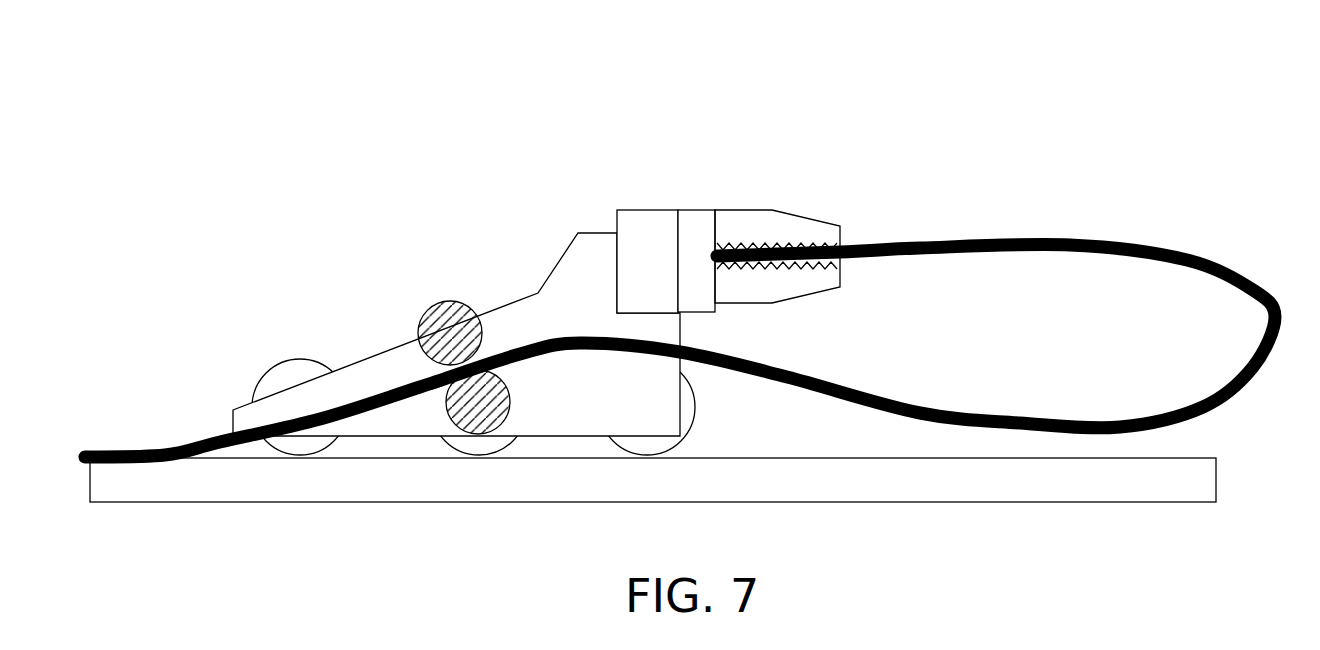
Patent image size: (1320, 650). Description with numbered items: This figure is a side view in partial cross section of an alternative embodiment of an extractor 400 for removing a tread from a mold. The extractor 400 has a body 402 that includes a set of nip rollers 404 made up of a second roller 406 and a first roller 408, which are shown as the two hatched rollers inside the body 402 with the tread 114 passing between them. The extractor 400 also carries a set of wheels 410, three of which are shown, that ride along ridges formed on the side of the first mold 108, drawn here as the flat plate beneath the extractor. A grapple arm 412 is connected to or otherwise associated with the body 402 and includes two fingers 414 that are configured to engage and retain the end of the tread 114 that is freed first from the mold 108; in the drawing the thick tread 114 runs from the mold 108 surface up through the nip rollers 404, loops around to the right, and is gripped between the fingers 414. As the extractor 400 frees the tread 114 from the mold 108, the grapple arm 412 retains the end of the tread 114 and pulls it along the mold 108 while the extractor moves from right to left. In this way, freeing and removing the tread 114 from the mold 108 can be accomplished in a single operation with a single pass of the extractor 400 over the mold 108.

The first mold 108 is at (1212, 470).
The tread 114 is at (1075, 240).
The extractor 400 is at (565, 310).
The body 402 is at (358, 347).
The set of nip rollers 404 is at (461, 371).
The second roller 406 is at (443, 325).
The first roller 408 is at (477, 397).
The set of wheels 410 is at (303, 447).
The grapple arm 412 is at (650, 232).
The fingers 414 is at (790, 237).